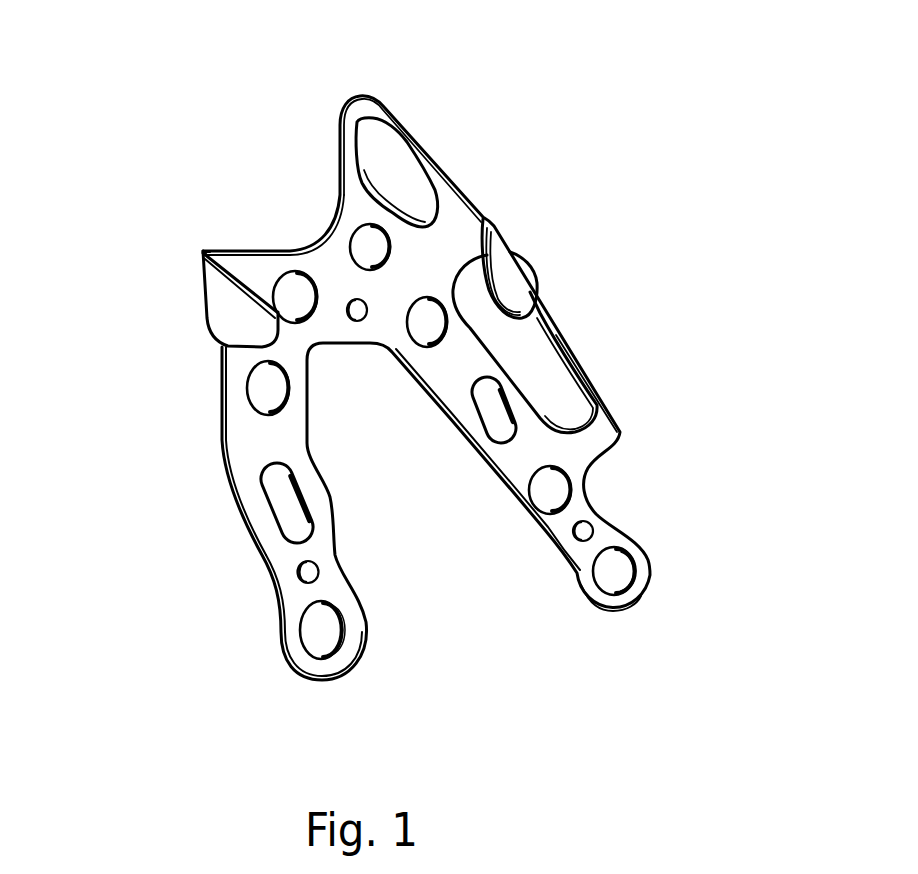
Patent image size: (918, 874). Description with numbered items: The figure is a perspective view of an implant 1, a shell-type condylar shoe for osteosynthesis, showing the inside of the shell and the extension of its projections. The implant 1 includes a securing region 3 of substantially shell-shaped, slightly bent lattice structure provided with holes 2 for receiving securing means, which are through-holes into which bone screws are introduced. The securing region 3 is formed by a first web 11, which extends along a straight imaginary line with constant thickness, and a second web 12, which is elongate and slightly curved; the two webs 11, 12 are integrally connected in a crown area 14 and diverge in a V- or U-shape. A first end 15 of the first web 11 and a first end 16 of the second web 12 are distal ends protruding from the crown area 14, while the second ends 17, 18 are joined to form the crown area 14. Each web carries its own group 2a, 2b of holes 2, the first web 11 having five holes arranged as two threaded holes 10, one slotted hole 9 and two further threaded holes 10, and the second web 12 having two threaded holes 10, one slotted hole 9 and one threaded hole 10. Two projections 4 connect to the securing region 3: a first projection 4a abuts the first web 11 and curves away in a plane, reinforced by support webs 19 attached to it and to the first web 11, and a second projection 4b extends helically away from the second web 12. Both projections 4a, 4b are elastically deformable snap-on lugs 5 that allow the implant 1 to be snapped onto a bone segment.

The implant 1 is at (572, 151).
The holes for receiving securing means 2 is at (318, 318).
The first group of holes 2a is at (603, 652).
The second group of holes 2b is at (297, 642).
The securing region 3 is at (307, 267).
The projections 4 is at (387, 285).
The first projection 4a is at (515, 273).
The second projection 4b is at (167, 285).
The snap-on lugs 5 is at (387, 285).
The slotted hole 9 is at (484, 398).
The threaded hole 10 is at (368, 226).
The first web 11 is at (480, 360).
The second web 12 is at (250, 450).
The crown area 14 is at (303, 284).
The first end of the first web 15 is at (633, 617).
The first end of the second web 16 is at (368, 655).
The second end of the first web 17 is at (391, 182).
The second end of the second web 18 is at (196, 253).
The support webs 19 is at (353, 118).